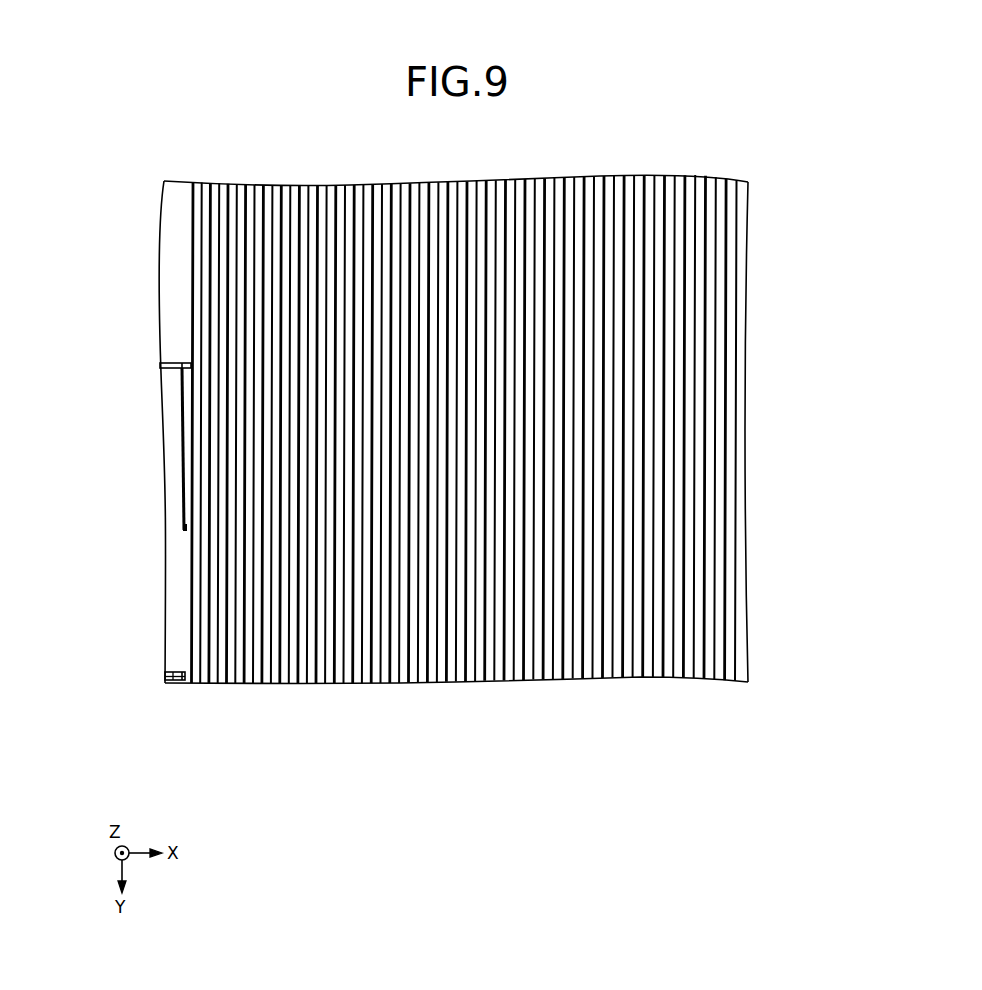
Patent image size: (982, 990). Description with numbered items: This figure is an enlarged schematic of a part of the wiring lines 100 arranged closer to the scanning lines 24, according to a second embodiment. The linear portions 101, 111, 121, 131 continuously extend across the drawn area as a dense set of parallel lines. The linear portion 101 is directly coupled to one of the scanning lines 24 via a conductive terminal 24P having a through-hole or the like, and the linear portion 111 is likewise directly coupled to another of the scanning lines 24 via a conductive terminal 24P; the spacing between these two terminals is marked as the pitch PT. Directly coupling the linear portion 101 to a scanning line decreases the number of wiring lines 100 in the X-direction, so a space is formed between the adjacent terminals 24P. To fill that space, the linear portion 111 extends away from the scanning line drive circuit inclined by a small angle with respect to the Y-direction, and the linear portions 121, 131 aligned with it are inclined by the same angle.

The wiring lines 100 is at (760, 268).
The scanning lines 24 is at (168, 363).
The conductive terminal 24P is at (185, 363).
The pitch between terminals PT is at (160, 362).
The linear portion 101 is at (183, 683).
The linear portion 111 is at (195, 683).
The linear portion 121 is at (210, 683).
The linear portion 131 is at (228, 683).